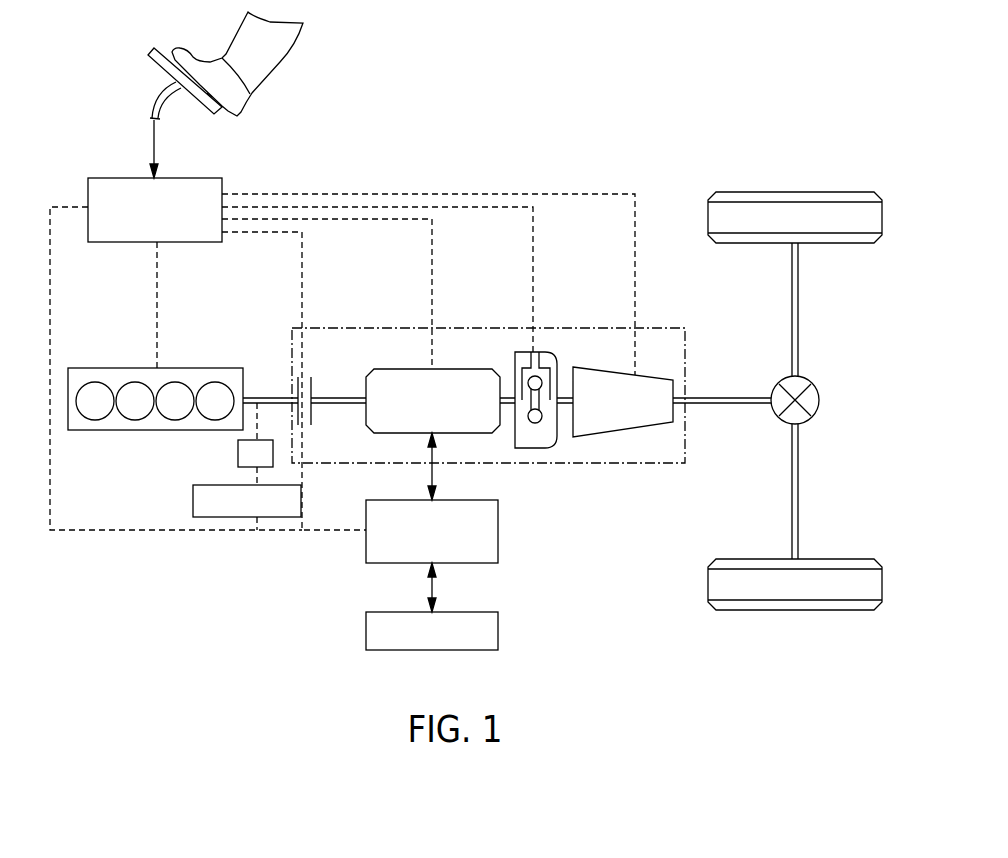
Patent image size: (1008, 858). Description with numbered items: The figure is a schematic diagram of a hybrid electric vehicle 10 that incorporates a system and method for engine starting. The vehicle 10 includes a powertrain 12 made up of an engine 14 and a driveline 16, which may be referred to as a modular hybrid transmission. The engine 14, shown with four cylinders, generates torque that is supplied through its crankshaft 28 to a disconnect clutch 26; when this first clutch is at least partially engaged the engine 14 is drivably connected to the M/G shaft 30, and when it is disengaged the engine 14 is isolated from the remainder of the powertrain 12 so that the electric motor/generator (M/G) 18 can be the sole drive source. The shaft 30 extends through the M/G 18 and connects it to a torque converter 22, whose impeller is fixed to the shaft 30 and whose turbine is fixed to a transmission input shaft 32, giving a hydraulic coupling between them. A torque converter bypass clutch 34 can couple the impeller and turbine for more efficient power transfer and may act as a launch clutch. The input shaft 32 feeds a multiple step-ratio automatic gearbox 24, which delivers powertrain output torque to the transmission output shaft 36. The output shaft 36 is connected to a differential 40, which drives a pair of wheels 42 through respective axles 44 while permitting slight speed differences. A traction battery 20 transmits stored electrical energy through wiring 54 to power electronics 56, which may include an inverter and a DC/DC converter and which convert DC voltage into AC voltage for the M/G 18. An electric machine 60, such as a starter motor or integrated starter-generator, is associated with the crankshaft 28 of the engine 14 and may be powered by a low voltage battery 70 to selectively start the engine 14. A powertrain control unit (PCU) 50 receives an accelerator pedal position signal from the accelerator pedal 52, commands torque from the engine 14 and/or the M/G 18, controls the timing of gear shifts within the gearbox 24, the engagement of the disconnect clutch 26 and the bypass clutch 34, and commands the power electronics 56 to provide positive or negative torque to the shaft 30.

The hybrid electric vehicle 10 is at (692, 124).
The powertrain 12 is at (260, 566).
The engine 14 is at (121, 367).
The driveline 16 is at (471, 327).
The electric motor/generator (M/G) 18 is at (411, 368).
The traction battery 20 is at (498, 626).
The torque converter 22 is at (549, 449).
The gearbox 24 is at (613, 438).
The disconnect clutch 26 is at (298, 428).
The crankshaft 28 is at (271, 396).
The M/G shaft 30 is at (349, 396).
The transmission input shaft 32 is at (574, 369).
The torque converter bypass clutch 34 is at (537, 351).
The transmission output shaft 36 is at (725, 395).
The differential 40 is at (820, 400).
The wheels 42 is at (797, 191).
The axles 44 is at (799, 323).
The powertrain control unit (PCU) 50 is at (101, 177).
The accelerator pedal 52 is at (160, 67).
The wiring 54 is at (439, 580).
The power electronics 56 is at (498, 535).
The electric machine 60 is at (238, 460).
The low voltage battery 70 is at (193, 504).